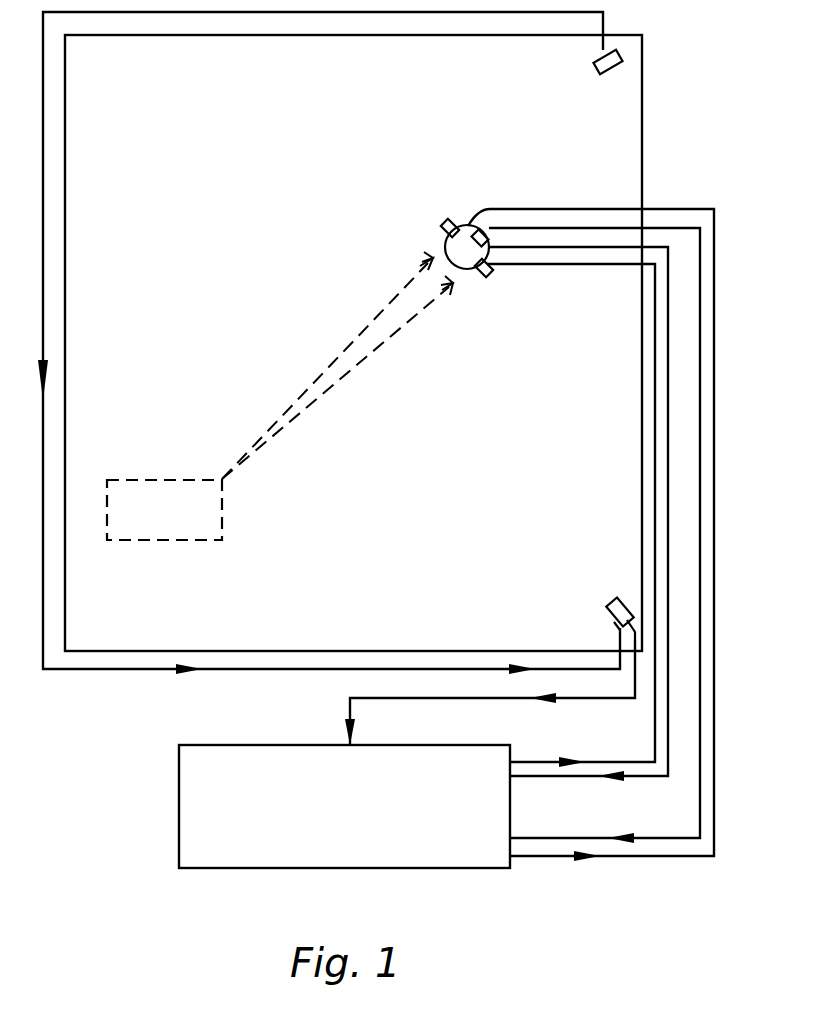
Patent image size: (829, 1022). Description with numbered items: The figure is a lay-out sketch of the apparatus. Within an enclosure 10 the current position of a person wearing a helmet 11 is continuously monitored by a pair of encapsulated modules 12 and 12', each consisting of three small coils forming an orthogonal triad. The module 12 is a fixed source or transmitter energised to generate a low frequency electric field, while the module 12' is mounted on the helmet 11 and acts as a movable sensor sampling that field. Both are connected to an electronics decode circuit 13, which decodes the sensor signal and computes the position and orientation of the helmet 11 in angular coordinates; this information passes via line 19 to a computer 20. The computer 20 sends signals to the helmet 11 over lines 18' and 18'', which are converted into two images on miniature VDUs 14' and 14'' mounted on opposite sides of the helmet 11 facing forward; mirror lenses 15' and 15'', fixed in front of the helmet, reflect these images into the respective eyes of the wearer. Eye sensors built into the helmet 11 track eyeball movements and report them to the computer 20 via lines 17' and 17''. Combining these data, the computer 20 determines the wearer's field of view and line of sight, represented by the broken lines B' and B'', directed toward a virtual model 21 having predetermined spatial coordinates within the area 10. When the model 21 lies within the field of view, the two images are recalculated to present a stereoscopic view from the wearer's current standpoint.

The enclosure 10 is at (176, 157).
The helmet 11 is at (466, 226).
The encapsulated module 12 is at (611, 85).
The encapsulated module 12' is at (516, 205).
The electronics decode circuit 13 is at (612, 606).
The miniature VDU 14' is at (512, 285).
The miniature VDU 14'' is at (420, 210).
The mirror lens 15' is at (396, 254).
The mirror lens 15'' is at (462, 311).
The line 17' is at (578, 514).
The line 17'' is at (626, 535).
The line 18' is at (571, 515).
The line 18'' is at (615, 535).
The line 19 is at (348, 724).
The computer 20 is at (179, 846).
The virtual model 21 is at (172, 527).
The broken line B' is at (327, 368).
The broken line B'' is at (337, 381).